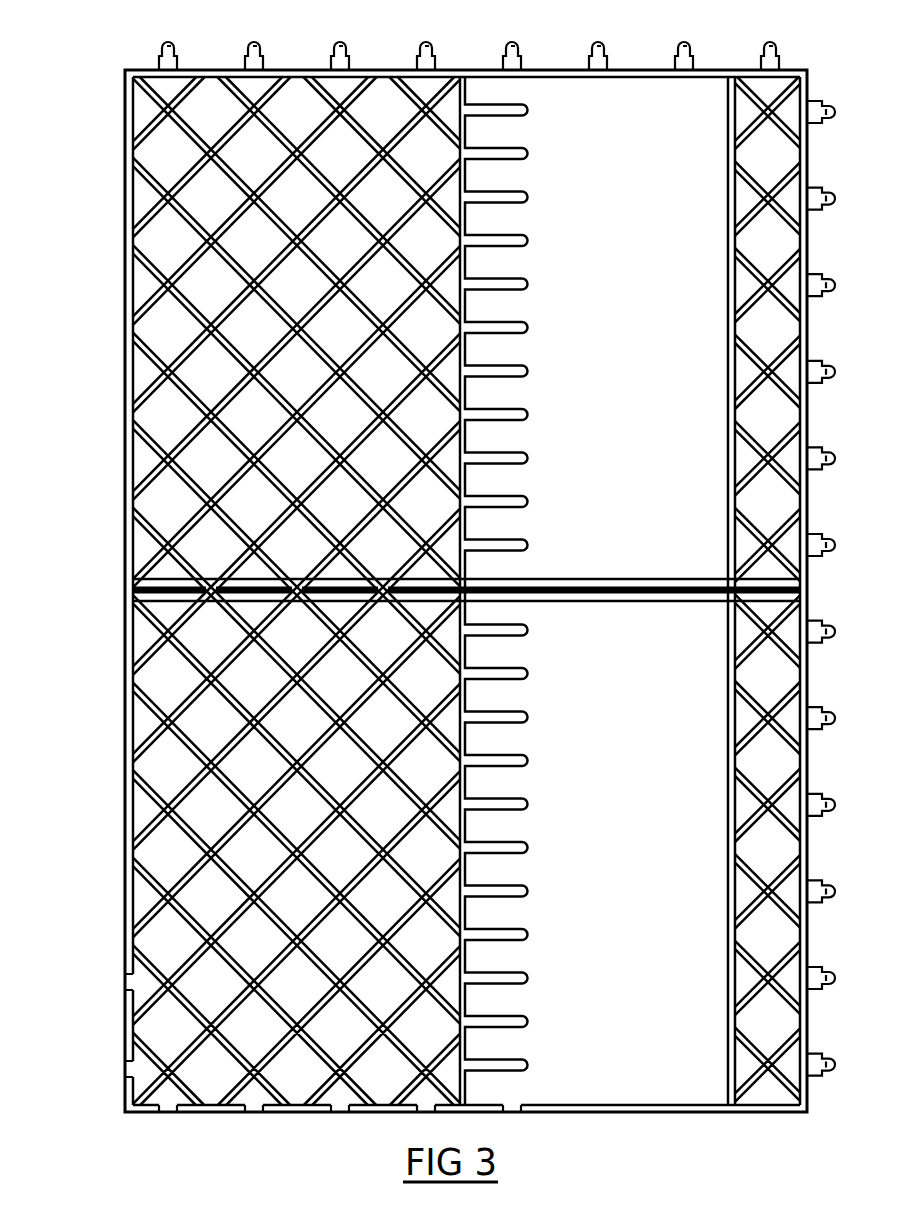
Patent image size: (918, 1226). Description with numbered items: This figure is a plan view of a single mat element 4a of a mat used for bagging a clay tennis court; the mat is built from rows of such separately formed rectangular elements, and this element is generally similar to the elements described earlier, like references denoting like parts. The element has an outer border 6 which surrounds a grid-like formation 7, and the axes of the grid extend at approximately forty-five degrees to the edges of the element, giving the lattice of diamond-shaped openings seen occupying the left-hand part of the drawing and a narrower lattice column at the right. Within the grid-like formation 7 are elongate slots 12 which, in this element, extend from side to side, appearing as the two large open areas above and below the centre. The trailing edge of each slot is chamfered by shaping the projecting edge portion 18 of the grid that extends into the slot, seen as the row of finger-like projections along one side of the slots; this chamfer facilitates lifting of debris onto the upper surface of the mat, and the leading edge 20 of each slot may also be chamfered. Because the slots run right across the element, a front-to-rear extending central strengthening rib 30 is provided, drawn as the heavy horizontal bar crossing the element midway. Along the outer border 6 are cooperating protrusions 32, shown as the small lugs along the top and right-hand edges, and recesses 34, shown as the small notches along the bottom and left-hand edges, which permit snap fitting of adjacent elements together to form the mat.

The mat element 4a is at (798, 68).
The outer border 6 is at (388, 68).
The grid-like formation 7 is at (200, 295).
The elongate slot 12 is at (600, 916).
The projecting edge portion 18 is at (503, 325).
The leading edge 20 is at (735, 753).
The central strengthening rib 30 is at (632, 600).
The protrusion 32 is at (178, 54).
The recess 34 is at (125, 982).